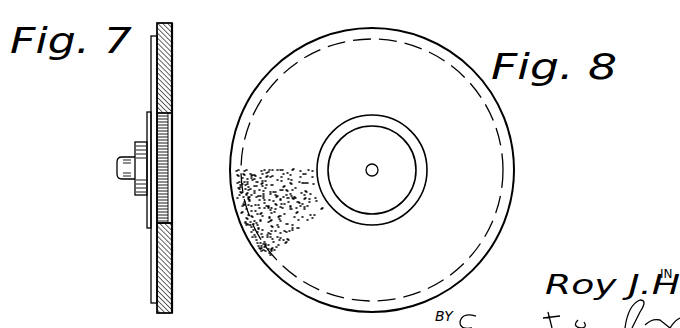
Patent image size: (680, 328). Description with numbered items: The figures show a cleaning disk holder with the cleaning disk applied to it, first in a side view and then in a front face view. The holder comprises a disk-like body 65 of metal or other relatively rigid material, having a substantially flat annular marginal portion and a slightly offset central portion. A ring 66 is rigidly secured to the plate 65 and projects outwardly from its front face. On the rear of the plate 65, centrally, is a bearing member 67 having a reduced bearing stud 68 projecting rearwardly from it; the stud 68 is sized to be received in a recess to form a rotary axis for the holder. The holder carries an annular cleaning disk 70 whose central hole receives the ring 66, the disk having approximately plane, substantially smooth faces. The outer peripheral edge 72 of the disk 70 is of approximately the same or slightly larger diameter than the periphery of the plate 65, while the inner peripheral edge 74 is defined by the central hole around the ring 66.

In FIG. 7, the disk-like body 65 is at (152, 252).
In FIG. 8, the disk-like body 65 is at (500, 198).
In FIG. 7, the ring 66 is at (172, 118).
In FIG. 8, the ring 66 is at (418, 148).
In FIG. 7, the bearing member 67 is at (137, 143).
In FIG. 7, the bearing stud 68 is at (132, 181).
In FIG. 7, the cleaning disk 70 is at (172, 62).
In FIG. 8, the cleaning disk 70 is at (485, 185).
In FIG. 7, the outer peripheral edge 72 is at (173, 24).
In FIG. 8, the outer peripheral edge 72 is at (513, 153).
In FIG. 7, the inner peripheral edge 74 is at (168, 221).